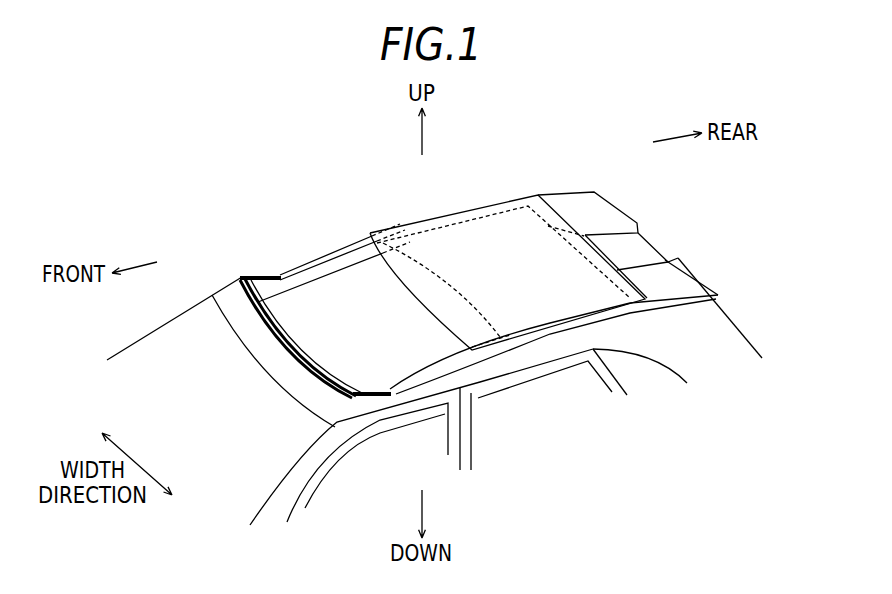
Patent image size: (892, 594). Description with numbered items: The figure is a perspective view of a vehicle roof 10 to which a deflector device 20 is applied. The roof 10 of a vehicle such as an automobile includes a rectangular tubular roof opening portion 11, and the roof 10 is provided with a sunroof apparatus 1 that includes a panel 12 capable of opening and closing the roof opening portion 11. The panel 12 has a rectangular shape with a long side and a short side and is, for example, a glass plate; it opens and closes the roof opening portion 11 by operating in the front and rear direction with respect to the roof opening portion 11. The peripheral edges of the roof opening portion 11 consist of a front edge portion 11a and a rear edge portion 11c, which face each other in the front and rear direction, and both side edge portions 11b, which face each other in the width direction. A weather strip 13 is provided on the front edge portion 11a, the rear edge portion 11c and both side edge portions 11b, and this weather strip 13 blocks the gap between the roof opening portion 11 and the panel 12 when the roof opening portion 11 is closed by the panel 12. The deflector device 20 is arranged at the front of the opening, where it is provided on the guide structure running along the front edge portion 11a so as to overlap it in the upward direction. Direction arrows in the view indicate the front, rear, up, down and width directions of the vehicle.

The sunroof apparatus 1 is at (495, 162).
The roof 10 is at (227, 296).
The roof opening portion 11 is at (282, 262).
The front edge portion 11a is at (307, 378).
The side edge portions 11b is at (313, 260).
The rear edge portion 11c is at (465, 296).
The panel 12 is at (515, 222).
The weather strip 13 is at (452, 345).
The deflector device 20 is at (265, 338).